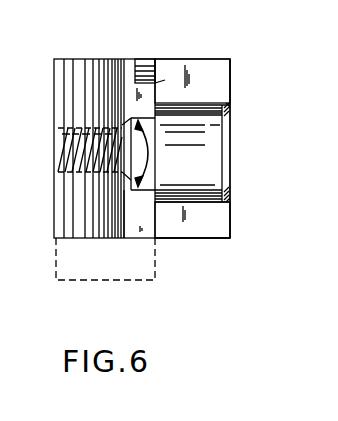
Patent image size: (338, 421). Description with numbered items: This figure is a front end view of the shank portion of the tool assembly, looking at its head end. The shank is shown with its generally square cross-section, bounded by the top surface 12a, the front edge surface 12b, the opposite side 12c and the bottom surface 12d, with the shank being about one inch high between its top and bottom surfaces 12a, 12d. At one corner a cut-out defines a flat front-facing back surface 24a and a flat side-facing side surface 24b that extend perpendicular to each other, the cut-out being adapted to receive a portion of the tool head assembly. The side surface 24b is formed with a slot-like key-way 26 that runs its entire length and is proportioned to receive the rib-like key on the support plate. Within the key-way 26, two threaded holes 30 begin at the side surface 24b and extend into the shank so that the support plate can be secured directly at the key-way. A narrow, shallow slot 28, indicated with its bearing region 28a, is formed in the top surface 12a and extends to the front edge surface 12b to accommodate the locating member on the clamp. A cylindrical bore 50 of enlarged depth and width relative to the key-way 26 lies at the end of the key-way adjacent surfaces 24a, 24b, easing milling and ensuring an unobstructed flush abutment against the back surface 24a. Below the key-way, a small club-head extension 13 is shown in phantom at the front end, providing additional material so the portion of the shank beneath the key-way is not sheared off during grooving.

The top surface 12a is at (89, 59).
The front edge surface 12b is at (147, 224).
The second side wall of housing 12c is at (232, 72).
The bottom surface 12d is at (181, 238).
The club-head extension 13 is at (122, 266).
The back surface 24a is at (220, 87).
The side surface 24b is at (158, 82).
The key-way 26 is at (149, 151).
The slot 28 is at (146, 64).
The pin bearing block 28a is at (140, 58).
The threaded holes 30 is at (58, 141).
The cylindrical bore 50 is at (214, 168).